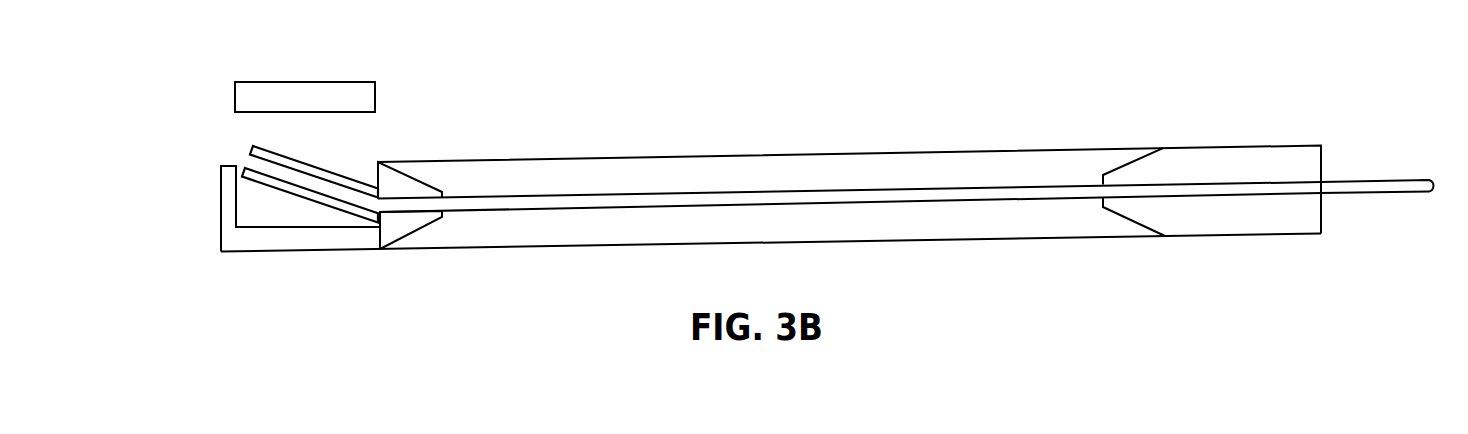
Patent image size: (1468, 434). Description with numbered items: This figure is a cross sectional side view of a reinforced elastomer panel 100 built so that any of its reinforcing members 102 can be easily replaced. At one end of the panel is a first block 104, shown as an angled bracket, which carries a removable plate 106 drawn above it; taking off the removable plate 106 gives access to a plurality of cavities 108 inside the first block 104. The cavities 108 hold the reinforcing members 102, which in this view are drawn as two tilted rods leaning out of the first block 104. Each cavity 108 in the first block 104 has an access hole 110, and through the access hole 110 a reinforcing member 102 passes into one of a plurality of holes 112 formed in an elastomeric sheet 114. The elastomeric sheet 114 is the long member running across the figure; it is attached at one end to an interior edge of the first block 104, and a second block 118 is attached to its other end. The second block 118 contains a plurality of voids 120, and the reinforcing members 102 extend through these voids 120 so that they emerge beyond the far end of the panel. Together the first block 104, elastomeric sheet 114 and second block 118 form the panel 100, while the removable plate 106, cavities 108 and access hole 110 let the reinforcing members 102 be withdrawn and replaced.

The reinforced elastomer panel 100 is at (766, 23).
The reinforcing members 102 is at (332, 192).
The first block 104 is at (228, 207).
The removable plate 106 is at (325, 90).
The cavities 108 is at (299, 217).
The access hole 110 is at (443, 212).
The holes 112 is at (565, 207).
The elastomeric sheet 114 is at (920, 213).
The second block 118 is at (1178, 163).
The voids 120 is at (1167, 198).